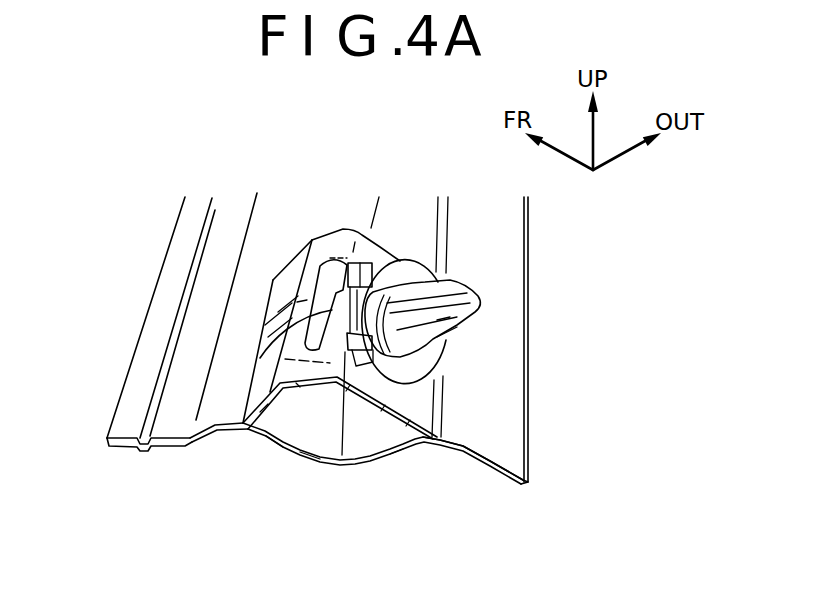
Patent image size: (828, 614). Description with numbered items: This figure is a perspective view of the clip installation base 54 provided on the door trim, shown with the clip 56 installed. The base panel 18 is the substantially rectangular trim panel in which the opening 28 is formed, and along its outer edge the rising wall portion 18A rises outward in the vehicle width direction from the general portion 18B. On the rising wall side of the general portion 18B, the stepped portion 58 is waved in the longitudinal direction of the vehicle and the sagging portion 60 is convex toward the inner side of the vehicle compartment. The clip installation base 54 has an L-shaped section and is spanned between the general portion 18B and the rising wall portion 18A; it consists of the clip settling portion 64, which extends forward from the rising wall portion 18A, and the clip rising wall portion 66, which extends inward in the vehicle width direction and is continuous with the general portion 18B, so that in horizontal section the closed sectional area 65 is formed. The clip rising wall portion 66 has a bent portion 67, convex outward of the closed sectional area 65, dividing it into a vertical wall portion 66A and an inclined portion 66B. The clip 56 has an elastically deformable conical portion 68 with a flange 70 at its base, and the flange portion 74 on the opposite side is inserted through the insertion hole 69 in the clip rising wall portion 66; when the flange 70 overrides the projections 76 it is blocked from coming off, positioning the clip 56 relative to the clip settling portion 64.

The base panel 18 is at (545, 393).
The rising wall portion 18A is at (407, 450).
The general portion 18B is at (160, 427).
The opening 28 is at (127, 372).
The clip installation base 54 is at (318, 405).
The clip 56 is at (505, 254).
The stepped portion 58 is at (287, 472).
The sagging portion 60 is at (193, 448).
The clip settling portion 64 is at (395, 375).
The closed sectional area 65 is at (334, 432).
The clip rising wall portion 66 is at (305, 349).
The vertical wall portion 66A is at (330, 245).
The inclined portion 66B is at (236, 440).
The bent portion 67 is at (273, 293).
The conical portion 68 is at (455, 328).
The insertion hole 69 is at (314, 270).
The flange 70 is at (433, 362).
The flange portion 74 is at (260, 358).
The projection 76 is at (376, 262).